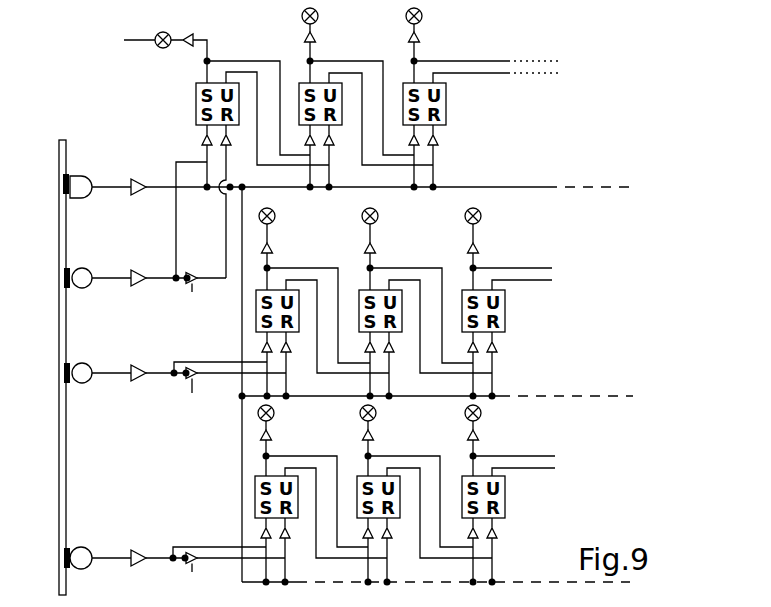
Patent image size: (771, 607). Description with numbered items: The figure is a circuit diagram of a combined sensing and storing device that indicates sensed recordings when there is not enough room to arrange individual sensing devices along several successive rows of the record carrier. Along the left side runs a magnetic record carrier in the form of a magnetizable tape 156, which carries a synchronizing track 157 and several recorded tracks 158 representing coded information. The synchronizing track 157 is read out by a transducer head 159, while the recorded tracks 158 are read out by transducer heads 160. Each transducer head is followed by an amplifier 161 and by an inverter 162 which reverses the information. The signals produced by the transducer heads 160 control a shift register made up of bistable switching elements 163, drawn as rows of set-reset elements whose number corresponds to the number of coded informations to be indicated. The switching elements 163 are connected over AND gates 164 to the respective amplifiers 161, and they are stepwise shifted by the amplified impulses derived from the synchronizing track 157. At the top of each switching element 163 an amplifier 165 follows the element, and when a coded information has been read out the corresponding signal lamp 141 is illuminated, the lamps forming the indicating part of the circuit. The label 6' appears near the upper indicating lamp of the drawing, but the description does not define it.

The indicator lamp 6' is at (211, 25).
The signal lamp 141 is at (422, 16).
The magnetizable tape 156 is at (67, 465).
The synchronizing track 157 is at (66, 177).
The recorded tracks 158 is at (59, 275).
The transducer head 159 is at (93, 183).
The transducer head 160 is at (81, 267).
The amplifier 161 is at (143, 269).
The inverter 162 is at (195, 434).
The bistable switching element 163 is at (446, 97).
The AND gate 164 is at (437, 144).
The amplifier 165 is at (420, 36).